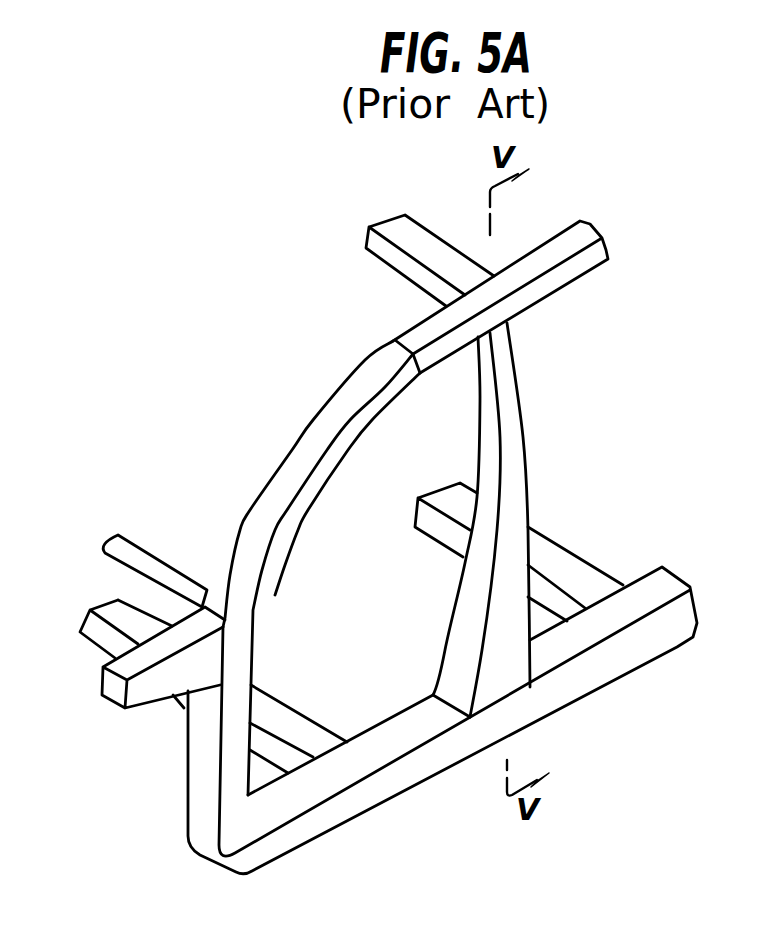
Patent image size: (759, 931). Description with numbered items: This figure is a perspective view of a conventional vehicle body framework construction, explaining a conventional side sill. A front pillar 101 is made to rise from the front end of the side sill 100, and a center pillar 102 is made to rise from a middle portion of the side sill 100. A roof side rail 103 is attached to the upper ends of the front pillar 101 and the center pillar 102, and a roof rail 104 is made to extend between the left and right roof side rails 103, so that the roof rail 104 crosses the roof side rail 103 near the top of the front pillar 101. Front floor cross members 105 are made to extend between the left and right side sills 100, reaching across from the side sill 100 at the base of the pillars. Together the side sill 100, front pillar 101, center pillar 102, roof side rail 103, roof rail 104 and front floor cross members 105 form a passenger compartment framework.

The side sill 100 is at (597, 691).
The front pillar 101 is at (270, 473).
The center pillar 102 is at (524, 432).
The roof side rail 103 is at (590, 266).
The roof rail 104 is at (378, 256).
The front floor cross member 105 is at (280, 701).